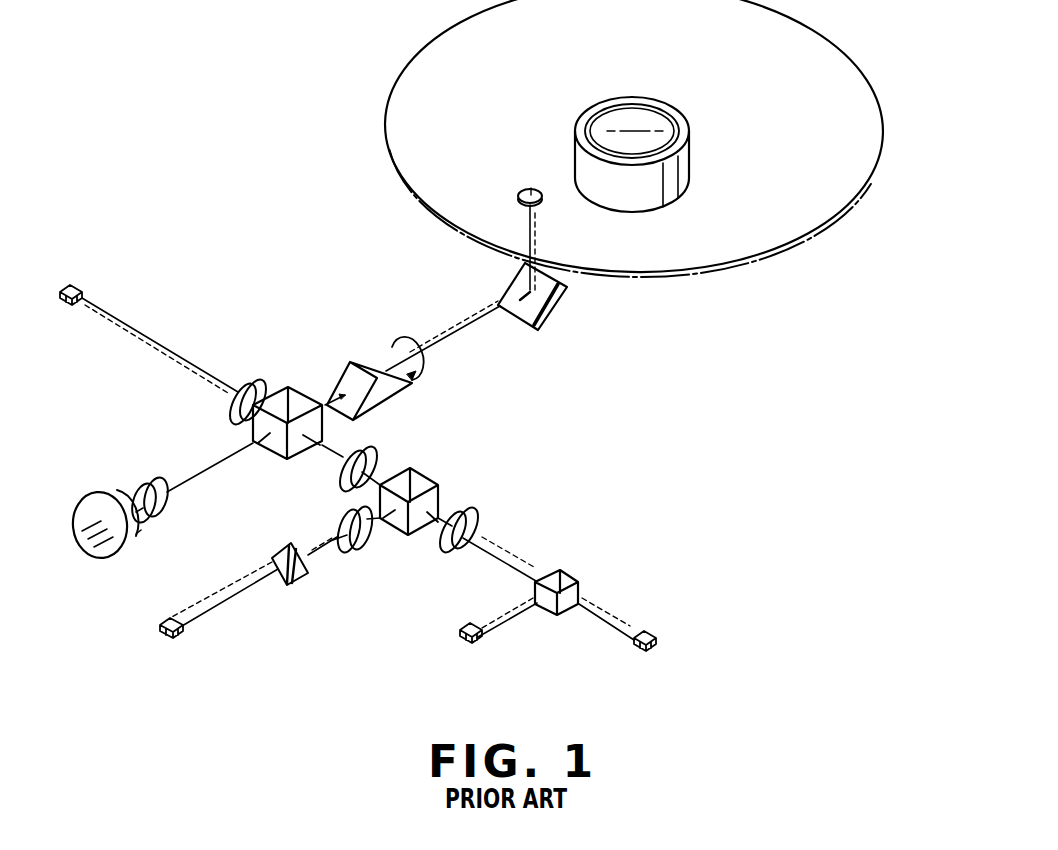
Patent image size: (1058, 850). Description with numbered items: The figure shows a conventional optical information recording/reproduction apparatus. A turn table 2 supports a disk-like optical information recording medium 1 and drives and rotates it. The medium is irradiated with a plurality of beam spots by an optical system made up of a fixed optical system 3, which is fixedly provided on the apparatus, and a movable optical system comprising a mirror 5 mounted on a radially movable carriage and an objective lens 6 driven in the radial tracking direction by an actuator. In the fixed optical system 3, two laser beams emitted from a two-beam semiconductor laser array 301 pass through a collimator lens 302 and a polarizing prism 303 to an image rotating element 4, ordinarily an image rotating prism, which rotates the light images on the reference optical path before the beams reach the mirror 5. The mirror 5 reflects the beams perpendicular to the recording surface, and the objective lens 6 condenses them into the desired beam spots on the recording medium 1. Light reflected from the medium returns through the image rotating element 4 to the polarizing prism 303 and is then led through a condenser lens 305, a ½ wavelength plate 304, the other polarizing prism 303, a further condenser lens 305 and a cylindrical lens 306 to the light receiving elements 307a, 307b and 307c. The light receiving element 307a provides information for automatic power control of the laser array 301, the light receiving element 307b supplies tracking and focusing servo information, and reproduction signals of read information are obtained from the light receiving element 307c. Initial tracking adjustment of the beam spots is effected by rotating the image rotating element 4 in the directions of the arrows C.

The disk-like optical information recording medium 1 is at (803, 243).
The turn table 2 is at (688, 163).
The fixed optical system 3 is at (274, 232).
The image rotating element 4 is at (352, 360).
The mirror 5 is at (566, 298).
The objective lens 6 is at (518, 194).
The two-beam semiconductor laser array 301 is at (118, 558).
The collimator lens 302 is at (163, 514).
The polarizing prism 303 is at (298, 388).
The ½ wavelength plate 304 is at (378, 448).
The condenser lens 305 is at (252, 382).
The cylindrical lens 306 is at (290, 588).
The light receiving element 307a is at (82, 292).
The light receiving element 307b is at (183, 636).
The light receiving element 307c is at (482, 642).
The arrows c C is at (408, 346).